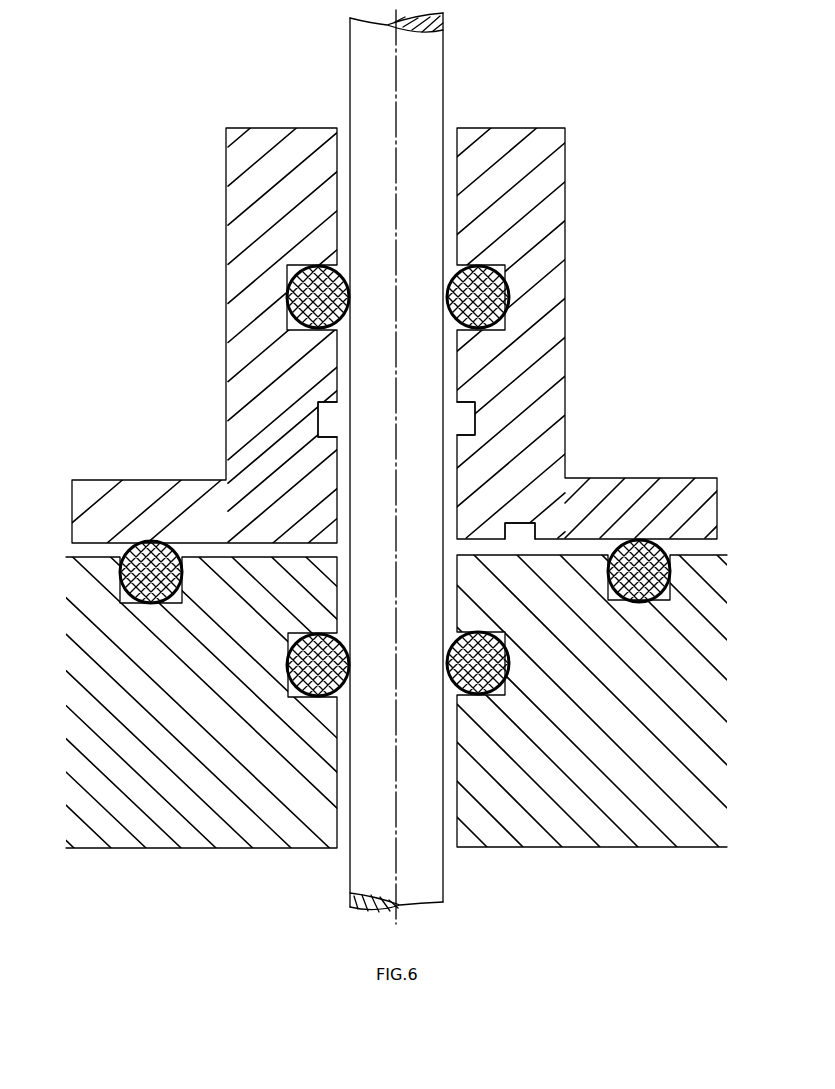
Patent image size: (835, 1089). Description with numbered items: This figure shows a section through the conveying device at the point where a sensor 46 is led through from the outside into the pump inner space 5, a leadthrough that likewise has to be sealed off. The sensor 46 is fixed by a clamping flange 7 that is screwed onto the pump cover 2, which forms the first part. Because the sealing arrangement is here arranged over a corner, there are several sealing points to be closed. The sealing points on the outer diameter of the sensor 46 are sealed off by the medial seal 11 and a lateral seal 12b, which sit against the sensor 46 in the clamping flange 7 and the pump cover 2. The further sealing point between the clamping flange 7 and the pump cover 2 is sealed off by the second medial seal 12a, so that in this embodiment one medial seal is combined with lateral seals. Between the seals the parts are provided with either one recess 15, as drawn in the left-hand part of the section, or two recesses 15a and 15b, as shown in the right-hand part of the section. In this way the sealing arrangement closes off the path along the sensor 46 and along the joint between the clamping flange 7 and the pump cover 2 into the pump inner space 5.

The sensor 46 is at (430, 60).
The clamping flange 7 is at (547, 185).
The recess 15 is at (328, 420).
The recess 15a is at (475, 418).
The recess 15b is at (520, 533).
The pump cover 2 is at (186, 793).
The lateral seal 12b is at (290, 293).
The second medial seal 12a is at (155, 603).
The medial seal 11 is at (288, 664).
The pump inner space 5 is at (518, 904).